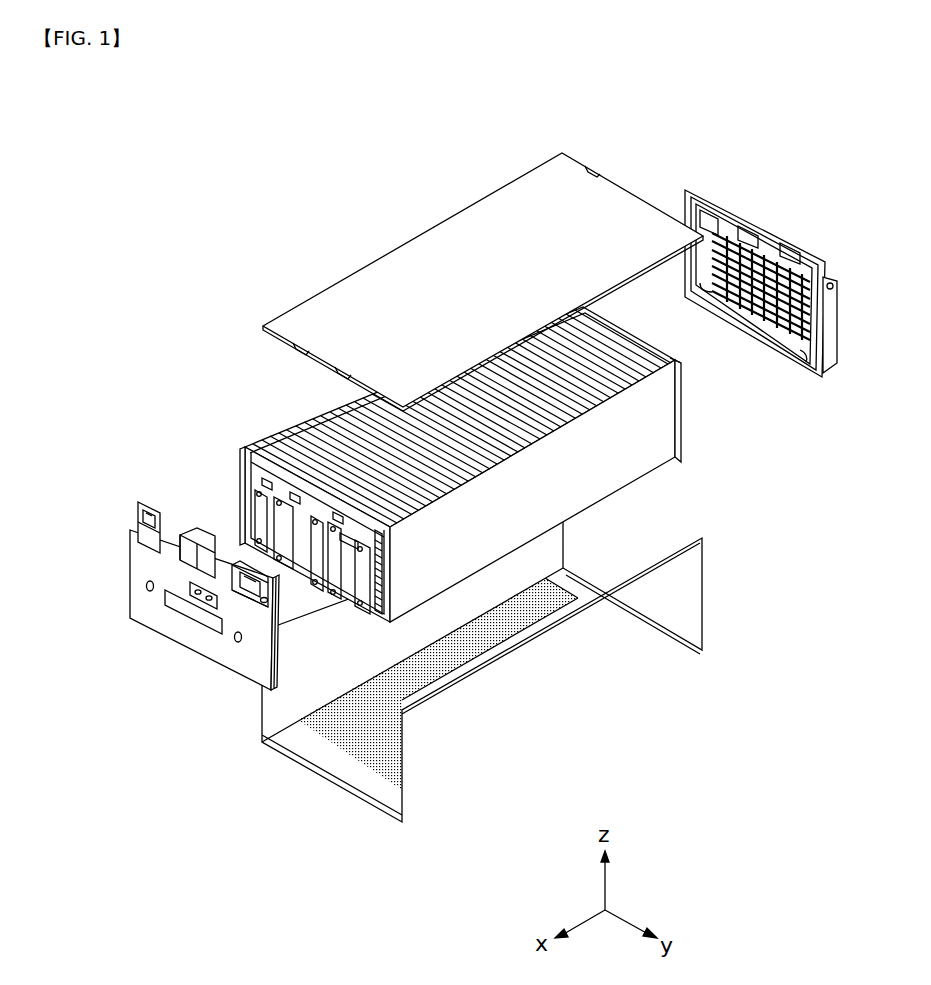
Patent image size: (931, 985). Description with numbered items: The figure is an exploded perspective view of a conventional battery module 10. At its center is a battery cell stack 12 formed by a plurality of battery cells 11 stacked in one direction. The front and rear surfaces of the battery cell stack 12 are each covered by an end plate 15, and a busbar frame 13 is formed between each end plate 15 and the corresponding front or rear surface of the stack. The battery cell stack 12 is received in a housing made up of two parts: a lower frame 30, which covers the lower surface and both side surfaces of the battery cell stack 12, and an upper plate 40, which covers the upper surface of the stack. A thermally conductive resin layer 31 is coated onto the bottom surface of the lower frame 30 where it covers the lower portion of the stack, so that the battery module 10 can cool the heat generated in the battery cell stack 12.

The battery module 10 is at (465, 101).
The battery cell 11 is at (633, 455).
The battery cell stack 12 is at (318, 429).
The busbar frame 13 is at (694, 398).
The end plate 15 is at (700, 187).
The lower frame 30 is at (583, 688).
The thermally conductive resin layer 31 is at (363, 746).
The upper plate 40 is at (423, 262).